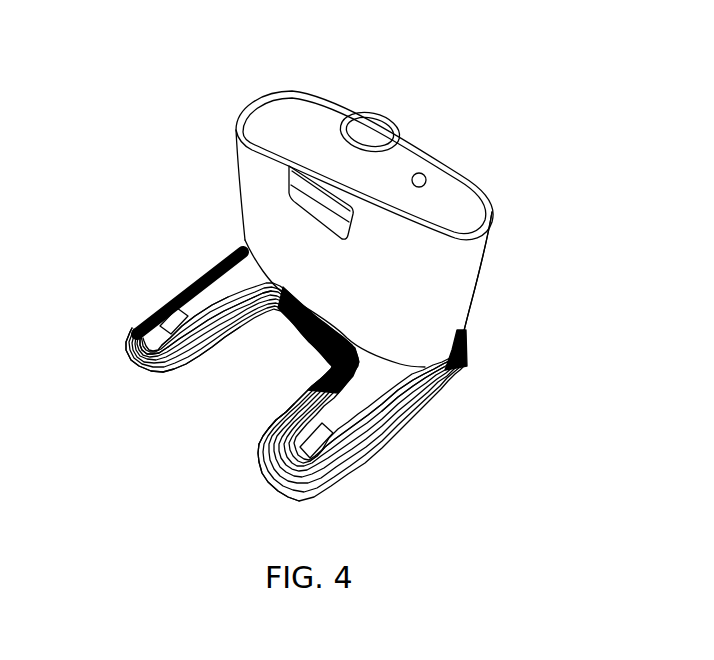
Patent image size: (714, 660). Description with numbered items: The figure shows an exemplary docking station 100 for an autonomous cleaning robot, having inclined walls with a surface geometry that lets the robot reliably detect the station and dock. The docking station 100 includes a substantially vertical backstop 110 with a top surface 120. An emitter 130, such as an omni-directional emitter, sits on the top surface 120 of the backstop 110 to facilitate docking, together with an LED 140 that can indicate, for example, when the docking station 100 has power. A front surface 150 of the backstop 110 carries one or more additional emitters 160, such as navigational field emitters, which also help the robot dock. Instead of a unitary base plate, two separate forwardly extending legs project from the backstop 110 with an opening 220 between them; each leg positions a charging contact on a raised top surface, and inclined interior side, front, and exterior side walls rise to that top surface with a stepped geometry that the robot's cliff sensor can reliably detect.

The docking station 100 is at (422, 125).
The backstop 110 is at (314, 123).
The top surface 120 is at (263, 114).
The emitter 130 is at (376, 128).
The LED 140 is at (425, 177).
The front surface 150 is at (462, 292).
The additional emitters 160 is at (313, 186).
The opening 220 is at (312, 354).